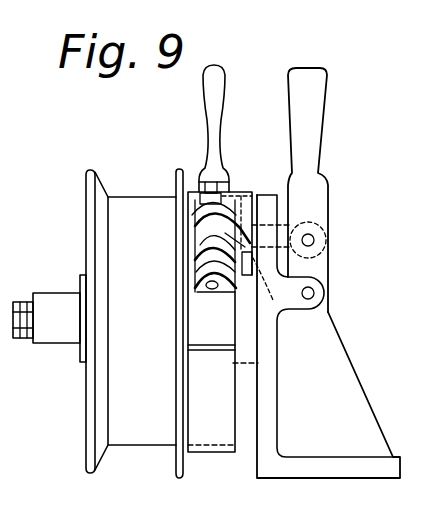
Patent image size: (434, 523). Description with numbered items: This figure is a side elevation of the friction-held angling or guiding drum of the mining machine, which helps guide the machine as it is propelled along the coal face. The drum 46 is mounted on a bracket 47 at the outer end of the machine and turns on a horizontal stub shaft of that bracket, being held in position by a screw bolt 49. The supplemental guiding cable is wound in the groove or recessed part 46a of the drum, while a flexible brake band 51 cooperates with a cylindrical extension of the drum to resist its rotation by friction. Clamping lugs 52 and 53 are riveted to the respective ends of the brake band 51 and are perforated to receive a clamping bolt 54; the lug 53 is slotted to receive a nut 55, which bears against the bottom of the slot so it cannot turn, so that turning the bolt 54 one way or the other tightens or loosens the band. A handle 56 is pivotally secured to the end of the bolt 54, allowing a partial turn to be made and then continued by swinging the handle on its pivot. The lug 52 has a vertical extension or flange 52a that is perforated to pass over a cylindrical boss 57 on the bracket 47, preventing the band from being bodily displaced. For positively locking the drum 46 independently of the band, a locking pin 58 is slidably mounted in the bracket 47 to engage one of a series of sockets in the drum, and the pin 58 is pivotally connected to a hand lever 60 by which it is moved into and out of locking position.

The drum 46 is at (96, 431).
The groove or recessed part of the drum 46a is at (137, 447).
The bracket 47 is at (328, 336).
The screw bolt 49 is at (44, 323).
The flexible brake band 51 is at (209, 437).
The clamping lug 52 is at (196, 210).
The vertical extension or flange 52a is at (240, 192).
The clamping lug 53 is at (198, 250).
The clamping bolt or screw 54 is at (213, 193).
The nut 55 is at (200, 273).
The handle 56 is at (224, 96).
The cylindrical boss 57 is at (278, 279).
The locking pin 58 is at (285, 228).
The hand lever 60 is at (315, 137).